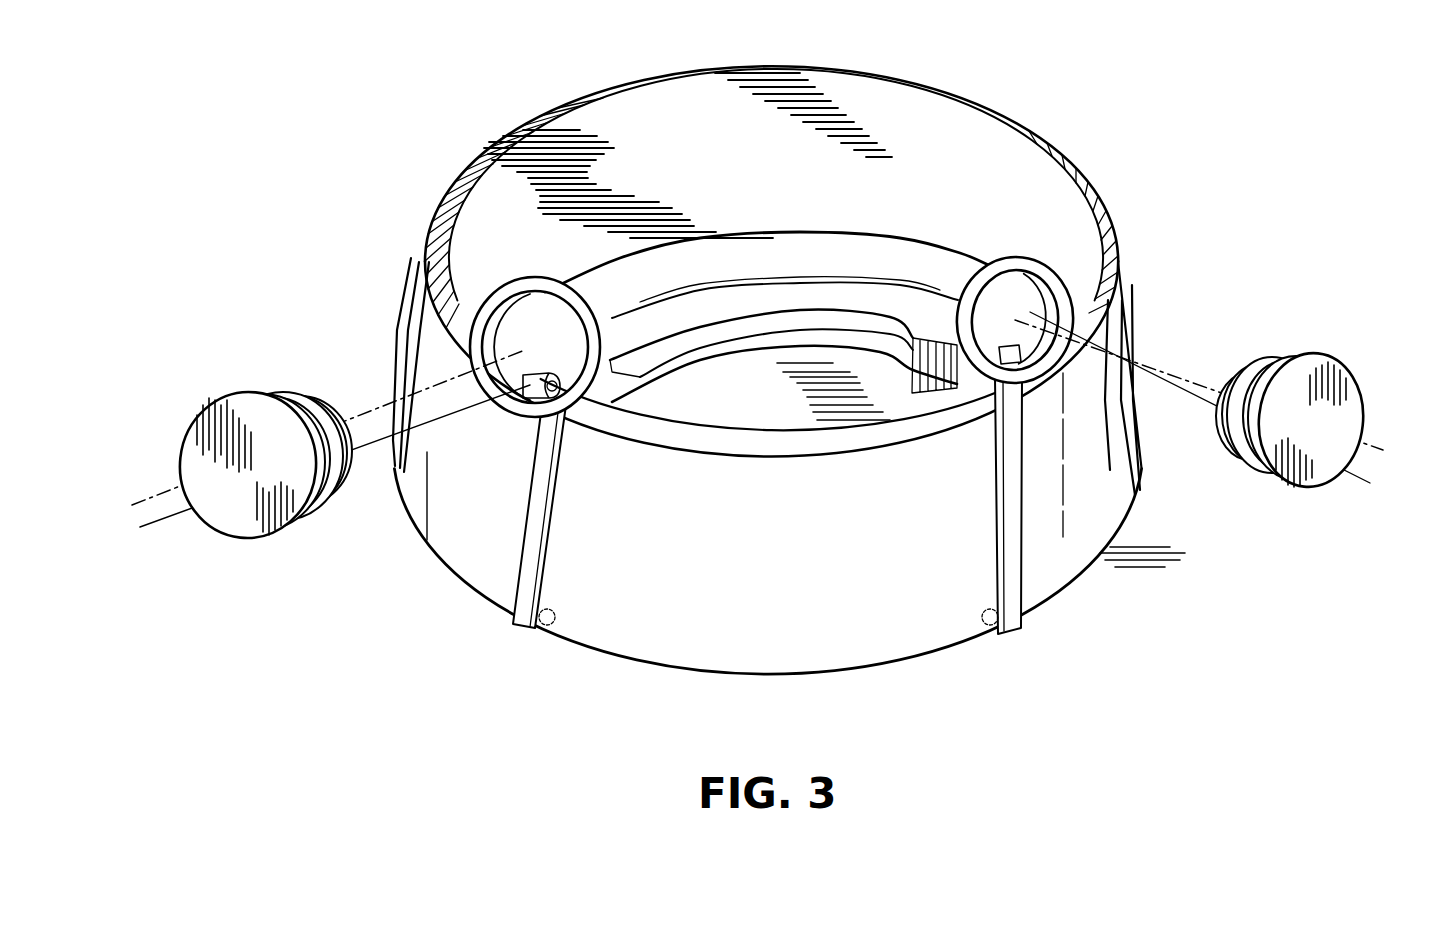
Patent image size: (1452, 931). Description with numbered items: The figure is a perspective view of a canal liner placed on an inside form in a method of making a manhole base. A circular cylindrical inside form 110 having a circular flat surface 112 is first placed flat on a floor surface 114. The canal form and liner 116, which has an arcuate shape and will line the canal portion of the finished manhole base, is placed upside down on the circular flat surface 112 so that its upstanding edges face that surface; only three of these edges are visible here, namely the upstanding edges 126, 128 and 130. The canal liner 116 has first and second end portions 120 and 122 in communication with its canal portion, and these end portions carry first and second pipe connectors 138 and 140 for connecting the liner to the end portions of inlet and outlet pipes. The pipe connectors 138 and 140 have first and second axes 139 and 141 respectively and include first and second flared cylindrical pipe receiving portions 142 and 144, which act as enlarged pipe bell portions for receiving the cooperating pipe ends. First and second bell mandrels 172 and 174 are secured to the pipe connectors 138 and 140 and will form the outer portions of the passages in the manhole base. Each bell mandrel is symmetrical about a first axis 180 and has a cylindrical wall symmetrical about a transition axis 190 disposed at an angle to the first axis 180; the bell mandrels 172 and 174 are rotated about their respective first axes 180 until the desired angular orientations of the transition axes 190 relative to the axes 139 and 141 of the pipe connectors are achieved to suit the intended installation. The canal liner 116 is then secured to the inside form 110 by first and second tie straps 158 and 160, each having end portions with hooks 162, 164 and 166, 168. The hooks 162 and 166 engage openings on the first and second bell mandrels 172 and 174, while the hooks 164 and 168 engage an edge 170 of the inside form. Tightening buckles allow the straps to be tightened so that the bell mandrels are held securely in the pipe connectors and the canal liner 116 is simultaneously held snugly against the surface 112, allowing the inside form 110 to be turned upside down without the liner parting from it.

The inside form 110 is at (832, 68).
The circular flat surface 112 is at (925, 122).
The floor surface 114 is at (1180, 546).
The canal form and liner 116 is at (783, 227).
The first end portion 120 is at (1000, 268).
The second end portion 122 is at (580, 410).
The second upstanding edge 126 is at (967, 420).
The third upstanding edge 128 is at (600, 413).
The fourth upstanding edge 130 is at (763, 352).
The first pipe connector 138 is at (1058, 273).
The first axis 139 is at (447, 373).
The second pipe connector 140 is at (478, 310).
The second axis 141 is at (1150, 369).
The first flared cylindrical pipe receiving portion 142 is at (1030, 256).
The second flared cylindrical pipe receiving portion 144 is at (516, 291).
The first tie strap 158 is at (1017, 560).
The second tie strap 160 is at (537, 537).
The hook 162 is at (1040, 340).
The hook 164 is at (980, 610).
The hook 166 is at (520, 355).
The hook 168 is at (556, 618).
The edge of the inside form 170 is at (887, 663).
The first bell mandrel 172 is at (1357, 406).
The second bell mandrel 174 is at (247, 525).
The first axis 180 is at (360, 433).
The transition axis 190 is at (160, 518).